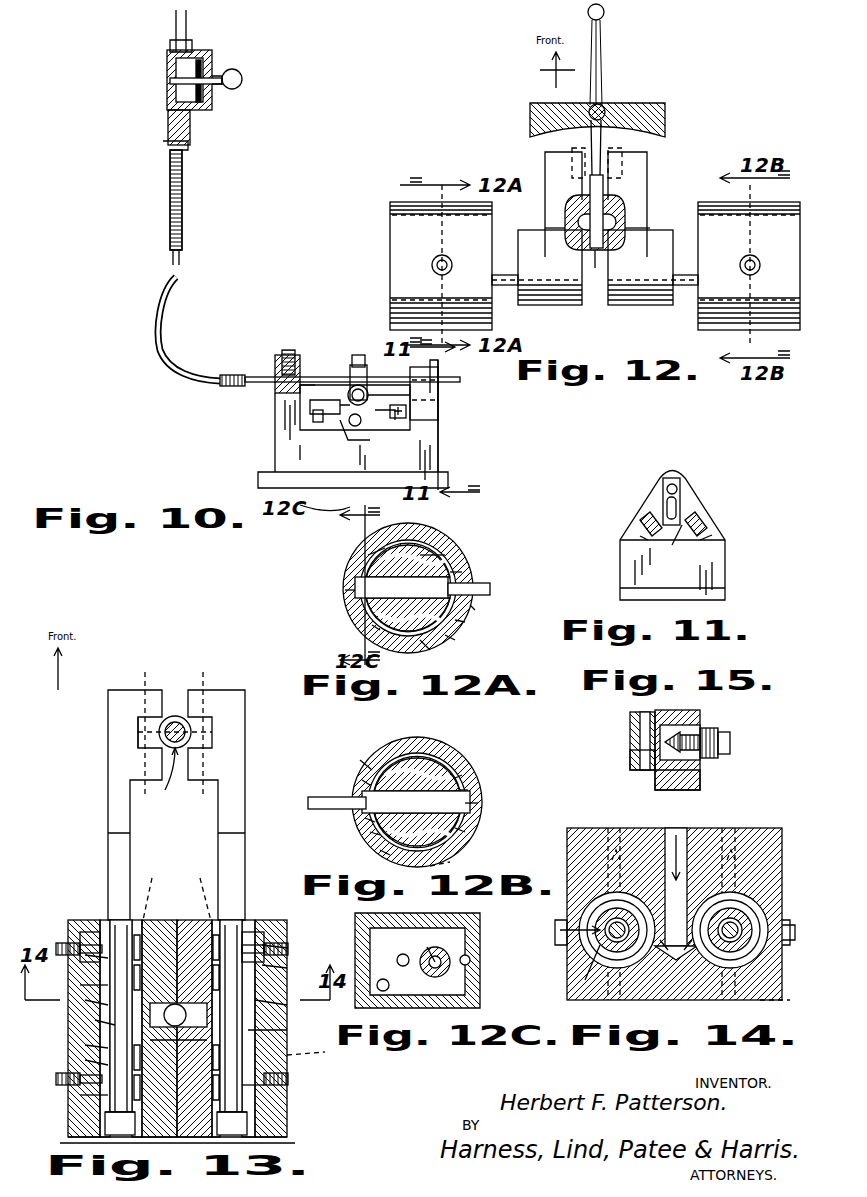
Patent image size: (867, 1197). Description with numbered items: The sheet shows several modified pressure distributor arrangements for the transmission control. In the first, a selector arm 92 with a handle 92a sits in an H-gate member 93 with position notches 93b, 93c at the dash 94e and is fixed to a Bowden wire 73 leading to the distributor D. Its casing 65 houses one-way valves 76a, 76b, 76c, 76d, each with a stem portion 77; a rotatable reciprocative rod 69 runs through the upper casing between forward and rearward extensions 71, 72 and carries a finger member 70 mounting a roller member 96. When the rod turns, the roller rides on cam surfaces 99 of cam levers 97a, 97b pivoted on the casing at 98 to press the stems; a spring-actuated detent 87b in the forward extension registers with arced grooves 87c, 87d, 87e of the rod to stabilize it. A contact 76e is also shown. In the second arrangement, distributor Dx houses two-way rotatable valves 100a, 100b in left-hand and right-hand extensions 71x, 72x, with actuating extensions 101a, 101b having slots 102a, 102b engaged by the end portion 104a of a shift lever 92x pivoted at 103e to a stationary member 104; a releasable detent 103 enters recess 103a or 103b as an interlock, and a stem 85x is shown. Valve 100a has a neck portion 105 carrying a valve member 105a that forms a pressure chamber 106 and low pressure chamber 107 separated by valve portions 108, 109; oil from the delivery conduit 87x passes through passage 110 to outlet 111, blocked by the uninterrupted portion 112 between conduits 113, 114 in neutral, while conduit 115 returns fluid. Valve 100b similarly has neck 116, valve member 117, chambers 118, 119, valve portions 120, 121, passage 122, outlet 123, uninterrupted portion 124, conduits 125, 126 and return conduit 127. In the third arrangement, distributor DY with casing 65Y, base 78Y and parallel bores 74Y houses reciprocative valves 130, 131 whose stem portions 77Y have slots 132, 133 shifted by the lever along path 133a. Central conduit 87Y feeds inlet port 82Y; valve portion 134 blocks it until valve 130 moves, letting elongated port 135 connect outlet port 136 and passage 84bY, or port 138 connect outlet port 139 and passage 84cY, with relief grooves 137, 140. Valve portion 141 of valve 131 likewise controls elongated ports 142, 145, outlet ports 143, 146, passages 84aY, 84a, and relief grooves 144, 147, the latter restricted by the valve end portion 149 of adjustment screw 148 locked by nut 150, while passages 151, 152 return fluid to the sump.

In FIG. 10, the dash 94e is at (188, 22).
In FIG. 10, the H-gate member 93 is at (212, 56).
In FIG. 10, the position notch 93b is at (196, 62).
In FIG. 10, the position notch 93c is at (190, 86).
In FIG. 10, the handle 92a is at (242, 80).
In FIG. 10, the selector arm 92 is at (218, 92).
In FIG. 10, the Bowden wire 73 is at (182, 262).
In FIG. 10, the arced groove 87e is at (245, 382).
In FIG. 10, the arced groove 87c is at (282, 390).
In FIG. 10, the forward extension 71 is at (278, 357).
In FIG. 10, the spring-actuated detent 87b is at (290, 350).
In FIG. 10, the arced groove 87d is at (318, 375).
In FIG. 10, the pressure distributor D is at (272, 460).
In FIG. 10, the casing 65 is at (287, 437).
In FIG. 11, the casing 65 is at (705, 568).
In FIG. 10, the selector actuating finger member 70 is at (362, 355).
In FIG. 11, the selector actuating finger member 70 is at (676, 492).
In FIG. 10, the rotatable reciprocative rod 69 is at (367, 378).
In FIG. 11, the rotatable reciprocative rod 69 is at (678, 485).
In FIG. 10, the rearward extension 72 is at (428, 357).
In FIG. 10, the cam surfaces 99 is at (330, 400).
In FIG. 10, the cam engaging roller member 96 is at (405, 395).
In FIG. 11, the cam engaging roller member 96 is at (676, 508).
In FIG. 10, the contact 76e is at (406, 412).
In FIG. 10, the stem portion 77 is at (395, 420).
In FIG. 10, the pivotal point 98 is at (355, 426).
In FIG. 10, the cam lever 97a is at (362, 425).
In FIG. 11, the cam lever 97a is at (640, 516).
In FIG. 10, the one-way valve 76b is at (318, 422).
In FIG. 12, the shift lever 92x is at (600, 55).
In FIG. 13, the shift lever 92x is at (165, 790).
In FIG. 12, the pivot 103e is at (603, 106).
In FIG. 12, the stationary member 104 is at (655, 118).
In FIG. 12, the slot 102a is at (572, 148).
In FIG. 12, the slot 102b is at (622, 148).
In FIG. 12, the actuating extension 101a is at (545, 168).
In FIG. 12, the end portion 104a is at (615, 162).
In FIG. 12, the pressure distributor Dx is at (625, 210).
In FIG. 12, the actuating extension 101b is at (616, 222).
In FIG. 12, the releasable detent 103 is at (605, 250).
In FIG. 12, the recess 103a is at (548, 228).
In FIG. 12A, the recess 103a is at (445, 555).
In FIG. 12, the recess 103b is at (626, 228).
In FIG. 12, the left-hand extension 71x is at (405, 190).
In FIG. 12A, the left-hand extension 71x is at (475, 610).
In FIG. 12C, the left-hand extension 71x is at (460, 985).
In FIG. 12, the pressure delivery conduit 87x is at (432, 268).
In FIG. 12A, the pressure delivery conduit 87x is at (490, 590).
In FIG. 12B, the pressure delivery conduit 87x is at (335, 797).
In FIG. 12, the neck portion 105 is at (518, 248).
In FIG. 12A, the neck portion 105 is at (438, 552).
In FIG. 12, the fluid pressure supply chamber 118 is at (673, 250).
In FIG. 12B, the fluid pressure supply chamber 118 is at (368, 822).
In FIG. 12, the right-hand extension 72x is at (775, 205).
In FIG. 12B, the right-hand extension 72x is at (405, 740).
In FIG. 12, the two-way rotatable valve 100a is at (505, 285).
In FIG. 12A, the two-way rotatable valve 100a is at (455, 640).
In FIG. 12, the two-way rotatable valve 100b is at (685, 285).
In FIG. 12B, the two-way rotatable valve 100b is at (385, 855).
In FIG. 12, the stem 85x is at (597, 268).
In FIG. 12A, the passage 110 is at (400, 528).
In FIG. 12A, the radially extending valve portion 108 is at (440, 560).
In FIG. 12A, the outlet 111 is at (372, 610).
In FIG. 12C, the outlet 111 is at (427, 947).
In FIG. 12A, the low pressure chamber 107 is at (362, 538).
In FIG. 12A, the conduit 113 is at (365, 558).
In FIG. 12C, the conduit 113 is at (470, 962).
In FIG. 12A, the uninterrupted portion 112 is at (345, 590).
In FIG. 12A, the conduit 114 is at (368, 630).
In FIG. 12C, the conduit 114 is at (398, 955).
In FIG. 12A, the fluid pressure supply chamber 106 is at (462, 572).
In FIG. 12A, the radially extending valve portion 109 is at (465, 622).
In FIG. 12A, the conduit 115 is at (430, 650).
In FIG. 12C, the conduit 115 is at (383, 979).
In FIG. 11, the one-way valve 76d is at (706, 530).
In FIG. 11, the one-way valve 76a is at (712, 540).
In FIG. 11, the one-way valve 76c is at (645, 538).
In FIG. 11, the cam lever 97b is at (672, 545).
In FIG. 15, the elongated circumferential fluid pressure port 145 is at (630, 720).
In FIG. 13, the elongated circumferential fluid pressure port 145 is at (287, 1030).
In FIG. 15, the casing 65Y is at (700, 772).
In FIG. 14, the casing 65Y is at (760, 975).
In FIG. 13, the casing 65Y is at (287, 1118).
In FIG. 15, the valve end portion 149 is at (690, 725).
In FIG. 15, the adjustment screw 148 is at (712, 728).
In FIG. 14, the adjustment screw 148 is at (790, 940).
In FIG. 15, the locking nut 150 is at (730, 745).
In FIG. 14, the locking nut 150 is at (795, 942).
In FIG. 15, the relief groove 147 is at (630, 757).
In FIG. 13, the relief groove 147 is at (288, 1085).
In FIG. 15, the base 78Y is at (655, 778).
In FIG. 13, the base 78Y is at (95, 1125).
In FIG. 14, the inlet port 82Y is at (676, 828).
In FIG. 13, the inlet port 82Y is at (178, 997).
In FIG. 14, the passage 151 is at (600, 828).
In FIG. 14, the passage 152 is at (733, 828).
In FIG. 14, the valve portion 134 is at (600, 960).
In FIG. 13, the valve portion 134 is at (85, 1045).
In FIG. 14, the two-way reciprocative valve 131 is at (750, 915).
In FIG. 13, the two-way reciprocative valve 131 is at (287, 1005).
In FIG. 14, the valve portion 141 is at (745, 935).
In FIG. 13, the valve portion 141 is at (287, 968).
In FIG. 14, the two-way reciprocative valve 130 is at (560, 930).
In FIG. 13, the two-way reciprocative valve 130 is at (85, 1000).
In FIG. 14, the passage 84bY is at (585, 980).
In FIG. 13, the passage 84bY is at (172, 893).
In FIG. 14, the passage 84aY is at (790, 1010).
In FIG. 13, the passage 84aY is at (203, 901).
In FIG. 12C, the valve member 105a is at (428, 975).
In FIG. 12B, the low pressure chamber 119 is at (445, 765).
In FIG. 12B, the neck portion 116 is at (452, 778).
In FIG. 12B, the radially extending valve portion 121 is at (385, 830).
In FIG. 12B, the radially extending valve portion 120 is at (372, 768).
In FIG. 12B, the valve member 117 is at (365, 780).
In FIG. 12B, the passage 122 is at (372, 835).
In FIG. 12B, the conduit 126 is at (462, 775).
In FIG. 12B, the outlet 123 is at (468, 790).
In FIG. 12B, the uninterrupted portion 124 is at (478, 803).
In FIG. 12B, the conduit 125 is at (465, 832).
In FIG. 12B, the conduit 127 is at (450, 862).
In FIG. 13, the stem portion 77Y is at (108, 885).
In FIG. 13, the path of movement 133a is at (145, 680).
In FIG. 13, the slot 133 is at (212, 730).
In FIG. 13, the slot 132 is at (138, 735).
In FIG. 13, the parallel bores 74Y is at (90, 920).
In FIG. 13, the elongated circumferential fluid pressure port 142 is at (180, 910).
In FIG. 13, the central conduit 87Y is at (178, 1056).
In FIG. 13, the relief groove 137 is at (80, 940).
In FIG. 13, the elongated circumferential fluid pressure port 135 is at (85, 955).
In FIG. 13, the outlet port 146 is at (56, 952).
In FIG. 13, the outlet port 136 is at (80, 985).
In FIG. 13, the passage 84cY is at (95, 1020).
In FIG. 13, the outlet port 139 is at (85, 1060).
In FIG. 13, the elongated fluid pressure port 138 is at (65, 1086).
In FIG. 13, the relief groove 140 is at (80, 1095).
In FIG. 13, the pressure distributor DY is at (70, 1140).
In FIG. 13, the relief groove 144 is at (287, 925).
In FIG. 13, the outlet port 143 is at (288, 948).
In FIG. 13, the conduit 84a is at (322, 1053).